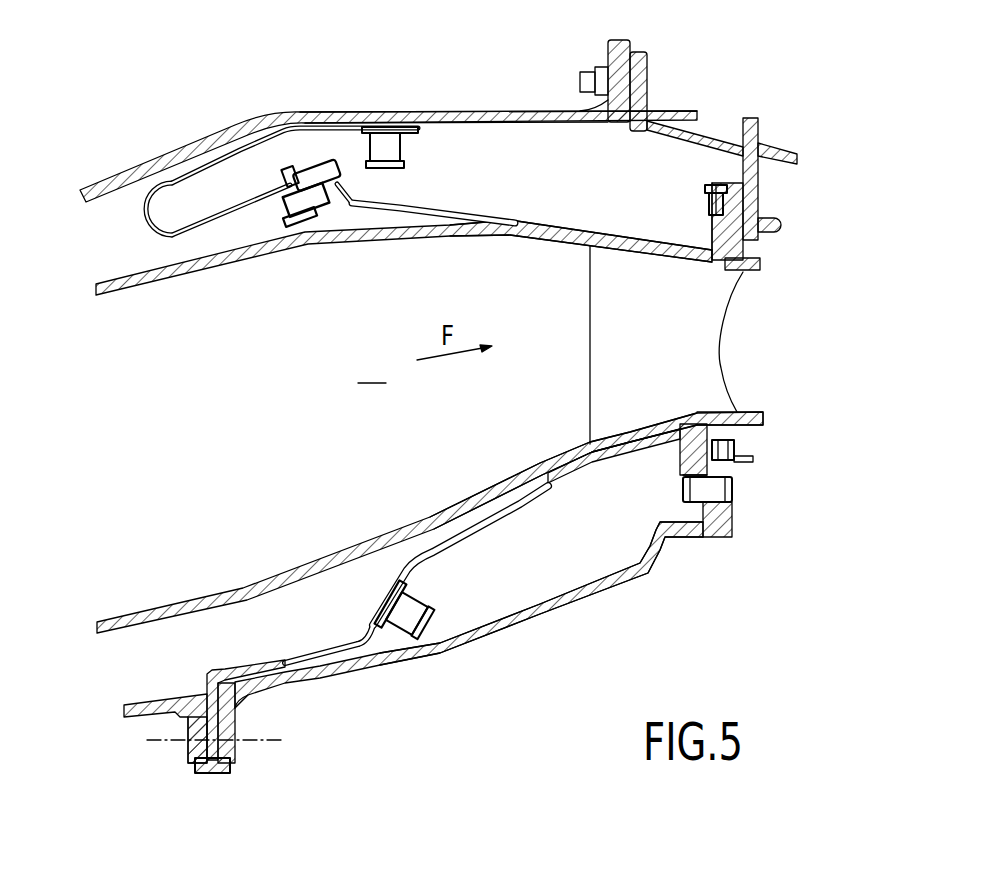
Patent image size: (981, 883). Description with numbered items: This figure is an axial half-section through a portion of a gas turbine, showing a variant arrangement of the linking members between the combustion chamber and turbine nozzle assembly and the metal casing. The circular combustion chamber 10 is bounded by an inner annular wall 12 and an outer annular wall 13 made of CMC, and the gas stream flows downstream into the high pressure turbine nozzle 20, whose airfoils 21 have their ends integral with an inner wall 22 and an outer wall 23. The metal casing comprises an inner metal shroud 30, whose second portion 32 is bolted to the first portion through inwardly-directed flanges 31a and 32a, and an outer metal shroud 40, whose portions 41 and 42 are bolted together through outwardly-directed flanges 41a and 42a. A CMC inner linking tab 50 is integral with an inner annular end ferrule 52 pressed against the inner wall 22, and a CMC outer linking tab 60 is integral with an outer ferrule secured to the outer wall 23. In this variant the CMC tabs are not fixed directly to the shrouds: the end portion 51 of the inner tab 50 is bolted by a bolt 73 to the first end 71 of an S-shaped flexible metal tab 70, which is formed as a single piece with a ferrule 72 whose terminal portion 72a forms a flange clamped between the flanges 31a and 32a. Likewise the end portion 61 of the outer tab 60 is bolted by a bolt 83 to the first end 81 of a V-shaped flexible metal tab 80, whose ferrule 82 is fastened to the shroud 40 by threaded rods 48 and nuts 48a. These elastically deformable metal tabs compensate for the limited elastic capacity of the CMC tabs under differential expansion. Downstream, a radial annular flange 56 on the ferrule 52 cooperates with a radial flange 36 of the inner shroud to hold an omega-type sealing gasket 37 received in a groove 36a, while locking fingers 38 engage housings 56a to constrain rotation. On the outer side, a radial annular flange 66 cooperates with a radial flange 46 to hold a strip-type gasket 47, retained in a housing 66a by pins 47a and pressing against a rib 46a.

The combustion chamber 10 is at (373, 366).
The inner annular wall 12 is at (363, 547).
The outer annular wall 13 is at (240, 252).
The high pressure turbine nozzle 20 is at (738, 367).
The airfoils 21 is at (605, 336).
The inner wall 22 is at (668, 430).
The outer wall 23 is at (652, 262).
The inner metal shroud 30 is at (340, 678).
The inwardly-directed flange 31a is at (190, 760).
The inner shroud portion 32 is at (567, 608).
The inwardly-directed flange 32a is at (238, 765).
The radial flange 36 is at (735, 528).
The groove 36a is at (756, 460).
The annular sealing gasket 37 is at (745, 440).
The locking fingers 38 is at (735, 490).
The outer metal shroud 40 is at (233, 128).
The outer shroud portion 41 is at (440, 112).
The outwardly-directed flange 41a is at (608, 52).
The outer shroud portion 42 is at (690, 128).
The outwardly-directed flange 42a is at (648, 72).
The radial flange 46 is at (780, 230).
The rib 46a is at (770, 166).
The annular sealing gasket 47 is at (714, 182).
The pins 47a is at (752, 212).
The threaded rods 48 is at (398, 168).
The nuts 48a is at (413, 143).
The inner linking tab 50 is at (407, 553).
The end portion 51 is at (385, 621).
The inner annular end ferrule 52 is at (620, 473).
The radial annular flange 56 is at (680, 452).
The housings 56a is at (697, 505).
The outer linking tab 60 is at (388, 216).
The end portion 61 is at (286, 166).
The radial annular flange 66 is at (748, 268).
The housing 66a is at (712, 222).
The flexible metal tab 70 is at (305, 655).
The first end 71 is at (412, 590).
The ferrule 72 is at (205, 668).
The terminal portion 72a is at (237, 705).
The bolt 73 is at (418, 636).
The flexible metal tab 80 is at (162, 234).
The first end 81 is at (338, 228).
The ferrule 82 is at (330, 126).
The bolt 83 is at (310, 230).